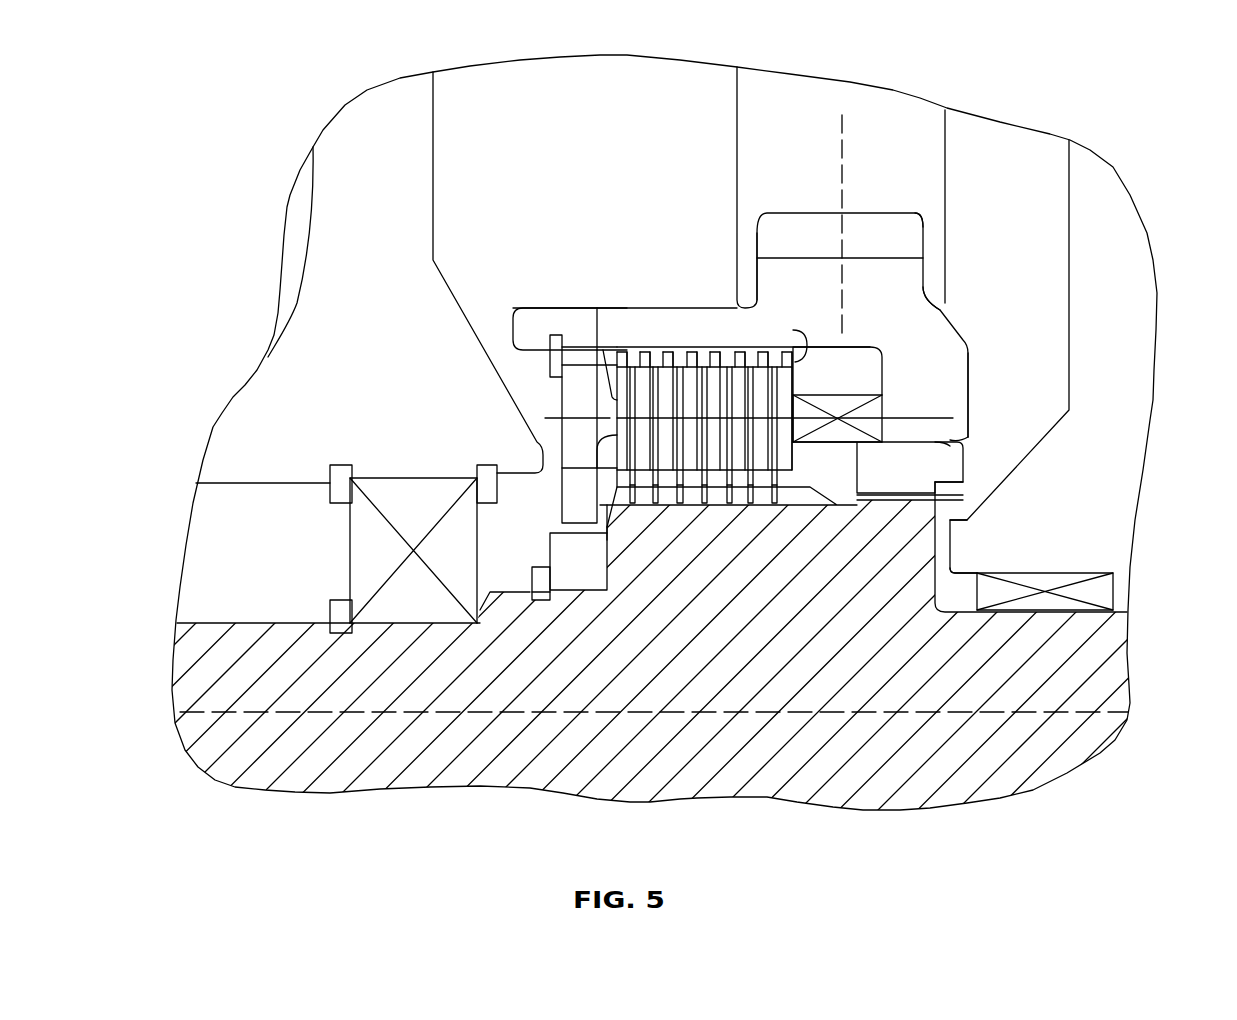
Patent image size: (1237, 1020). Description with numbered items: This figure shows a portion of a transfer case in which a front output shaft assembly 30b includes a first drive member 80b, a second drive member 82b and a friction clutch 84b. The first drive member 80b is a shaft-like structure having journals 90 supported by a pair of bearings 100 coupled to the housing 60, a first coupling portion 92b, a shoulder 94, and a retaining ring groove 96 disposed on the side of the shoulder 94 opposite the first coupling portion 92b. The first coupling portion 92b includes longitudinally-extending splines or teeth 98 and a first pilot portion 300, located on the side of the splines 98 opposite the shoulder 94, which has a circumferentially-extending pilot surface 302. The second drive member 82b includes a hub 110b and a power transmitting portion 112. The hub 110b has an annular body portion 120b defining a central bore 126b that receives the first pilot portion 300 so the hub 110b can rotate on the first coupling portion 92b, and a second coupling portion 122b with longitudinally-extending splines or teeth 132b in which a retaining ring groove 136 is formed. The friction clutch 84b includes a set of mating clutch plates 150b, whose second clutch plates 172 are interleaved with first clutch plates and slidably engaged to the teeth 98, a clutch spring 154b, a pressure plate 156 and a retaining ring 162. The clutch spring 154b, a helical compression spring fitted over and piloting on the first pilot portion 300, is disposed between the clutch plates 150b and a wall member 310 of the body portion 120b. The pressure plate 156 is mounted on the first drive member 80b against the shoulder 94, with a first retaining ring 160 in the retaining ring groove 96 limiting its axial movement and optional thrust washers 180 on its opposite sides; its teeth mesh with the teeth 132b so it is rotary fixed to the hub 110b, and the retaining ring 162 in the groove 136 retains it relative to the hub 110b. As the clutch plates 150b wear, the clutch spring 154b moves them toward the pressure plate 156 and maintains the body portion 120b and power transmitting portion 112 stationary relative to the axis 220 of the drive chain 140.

The front output shaft assembly 30b is at (1052, 320).
The drive chain 140 is at (933, 190).
The axis 220 is at (845, 153).
The hub 110b is at (773, 280).
The power transmitting portion 112 is at (918, 245).
The second drive member 82b is at (906, 290).
The housing 60 is at (1100, 504).
The second coupling portion 122b is at (530, 318).
The retaining ring groove 136 is at (553, 332).
The retaining ring 162 is at (556, 354).
The pressure plate 156 is at (572, 405).
The set of mating clutch plates 150b is at (606, 424).
The longitudinally-extending splines or teeth 132b is at (800, 343).
The friction clutch 84b is at (825, 381).
The wall member 310 is at (882, 388).
The body portion 120b is at (957, 378).
The central bore 126b is at (952, 438).
The clutch spring 154b is at (878, 467).
The pilot surface 302 is at (930, 443).
The first pilot portion 300 is at (952, 475).
The longitudinally-extending splines or teeth 98 is at (813, 500).
The first drive member 80b is at (918, 557).
The bearings 100 is at (400, 483).
The first coupling portion 92b is at (770, 523).
The shoulder 94 is at (637, 578).
The second clutch plates 172 is at (613, 556).
The thrust washers 180 is at (600, 577).
The first retaining ring 160 is at (533, 605).
The retaining ring groove 96 is at (533, 597).
The journals 90 is at (380, 673).